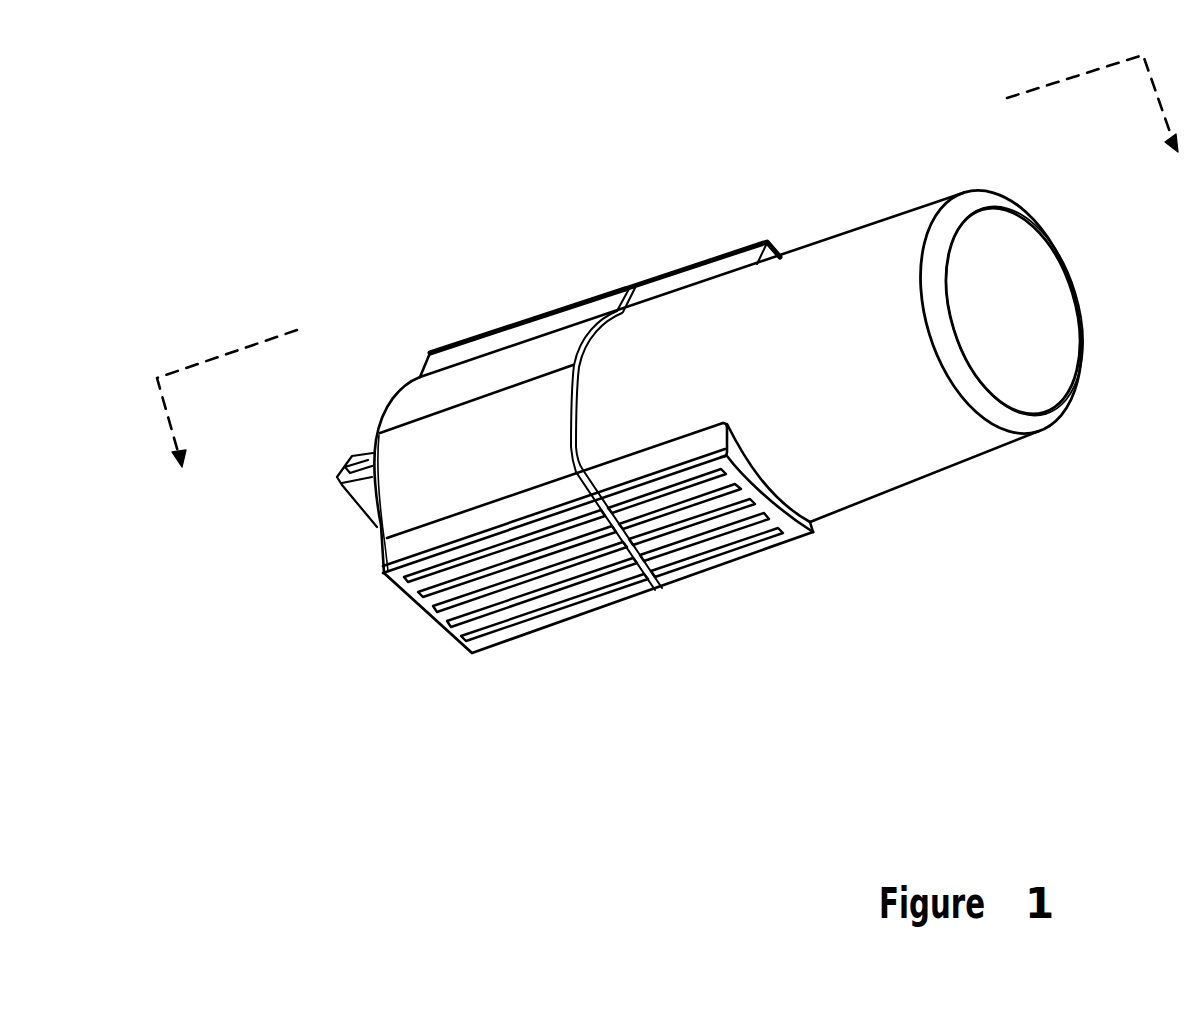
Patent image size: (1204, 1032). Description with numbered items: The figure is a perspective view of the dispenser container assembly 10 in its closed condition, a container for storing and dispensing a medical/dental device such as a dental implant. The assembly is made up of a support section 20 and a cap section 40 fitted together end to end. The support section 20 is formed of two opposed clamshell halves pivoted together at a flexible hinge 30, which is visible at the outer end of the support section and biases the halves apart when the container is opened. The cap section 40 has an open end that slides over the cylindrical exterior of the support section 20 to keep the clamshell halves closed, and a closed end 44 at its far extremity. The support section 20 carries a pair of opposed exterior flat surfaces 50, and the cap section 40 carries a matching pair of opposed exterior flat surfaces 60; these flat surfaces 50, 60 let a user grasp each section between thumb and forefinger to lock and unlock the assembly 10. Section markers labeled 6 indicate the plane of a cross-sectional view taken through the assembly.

The dispenser container assembly 10 is at (560, 177).
The support section 20 is at (430, 437).
The flexible hinge 30 is at (350, 488).
The cap section 40 is at (872, 260).
The closed end 44 is at (1037, 330).
The exterior flat surfaces 50 is at (515, 333).
The exterior flat surfaces 60 is at (688, 275).
The section line for FIG. 6 is at (1197, 150).